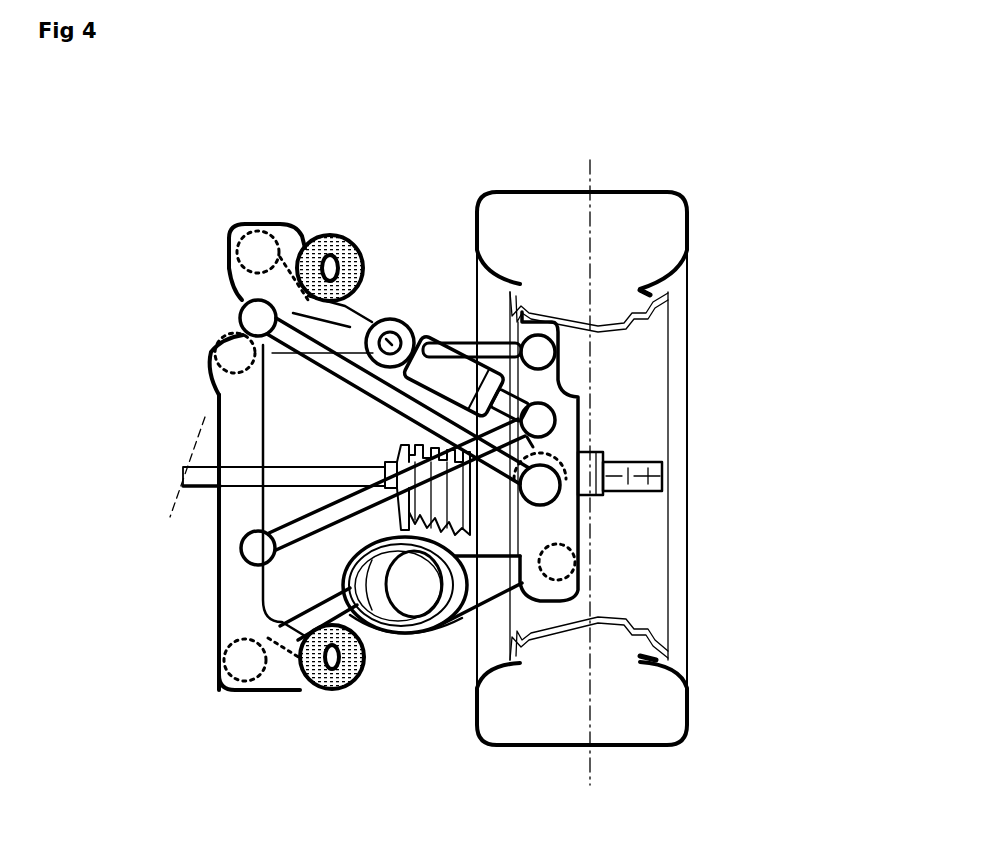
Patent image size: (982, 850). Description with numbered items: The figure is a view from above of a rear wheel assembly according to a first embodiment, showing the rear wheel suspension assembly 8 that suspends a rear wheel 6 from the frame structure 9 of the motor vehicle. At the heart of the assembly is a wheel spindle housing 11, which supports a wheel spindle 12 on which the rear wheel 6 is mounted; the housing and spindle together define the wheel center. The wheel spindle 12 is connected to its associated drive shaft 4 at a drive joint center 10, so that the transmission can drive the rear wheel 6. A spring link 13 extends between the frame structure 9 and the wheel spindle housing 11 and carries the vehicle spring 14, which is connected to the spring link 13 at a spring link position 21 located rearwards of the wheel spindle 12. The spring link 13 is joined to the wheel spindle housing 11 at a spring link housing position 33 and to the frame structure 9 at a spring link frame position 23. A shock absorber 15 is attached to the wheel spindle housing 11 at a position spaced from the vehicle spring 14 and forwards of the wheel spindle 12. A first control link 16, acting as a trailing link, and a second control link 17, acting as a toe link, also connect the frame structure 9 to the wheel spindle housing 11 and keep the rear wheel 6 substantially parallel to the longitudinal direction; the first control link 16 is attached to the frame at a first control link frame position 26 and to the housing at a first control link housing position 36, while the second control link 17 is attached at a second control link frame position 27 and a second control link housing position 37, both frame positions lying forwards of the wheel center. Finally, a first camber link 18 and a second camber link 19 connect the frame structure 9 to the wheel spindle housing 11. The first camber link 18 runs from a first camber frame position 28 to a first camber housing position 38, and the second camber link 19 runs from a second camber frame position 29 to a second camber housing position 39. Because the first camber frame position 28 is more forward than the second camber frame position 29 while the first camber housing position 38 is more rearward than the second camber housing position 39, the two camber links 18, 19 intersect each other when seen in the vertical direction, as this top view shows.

The drive shaft 4 is at (192, 478).
The rear wheel 6 is at (650, 215).
The rear wheel suspension assembly 8 is at (340, 205).
The frame structure 9 is at (224, 432).
The drive joint center 10 is at (407, 447).
The wheel spindle housing 11 is at (556, 382).
The wheel spindle 12 is at (632, 463).
The spring link 13 is at (482, 585).
The vehicle spring 14 is at (345, 572).
The shock absorber 15 is at (423, 330).
The first control link 16 is at (345, 318).
The second control link 17 is at (450, 342).
The first camber link 18 is at (392, 378).
The second camber link 19 is at (318, 512).
The spring link position 21 is at (427, 640).
The spring link frame position 23 is at (238, 645).
The first control link frame position 26 is at (242, 247).
The second control link frame position 27 is at (210, 350).
The first camber frame position 28 is at (245, 312).
The second camber frame position 29 is at (241, 550).
The spring link housing position 33 is at (575, 568).
The first control link housing position 36 is at (552, 483).
The second control link housing position 37 is at (531, 350).
The first camber housing position 38 is at (536, 489).
The second camber housing position 39 is at (548, 418).